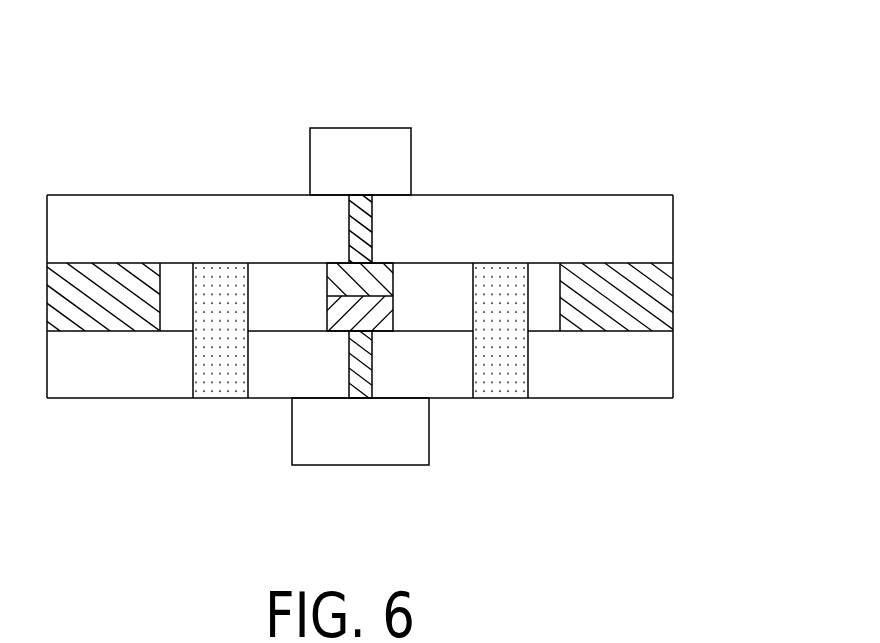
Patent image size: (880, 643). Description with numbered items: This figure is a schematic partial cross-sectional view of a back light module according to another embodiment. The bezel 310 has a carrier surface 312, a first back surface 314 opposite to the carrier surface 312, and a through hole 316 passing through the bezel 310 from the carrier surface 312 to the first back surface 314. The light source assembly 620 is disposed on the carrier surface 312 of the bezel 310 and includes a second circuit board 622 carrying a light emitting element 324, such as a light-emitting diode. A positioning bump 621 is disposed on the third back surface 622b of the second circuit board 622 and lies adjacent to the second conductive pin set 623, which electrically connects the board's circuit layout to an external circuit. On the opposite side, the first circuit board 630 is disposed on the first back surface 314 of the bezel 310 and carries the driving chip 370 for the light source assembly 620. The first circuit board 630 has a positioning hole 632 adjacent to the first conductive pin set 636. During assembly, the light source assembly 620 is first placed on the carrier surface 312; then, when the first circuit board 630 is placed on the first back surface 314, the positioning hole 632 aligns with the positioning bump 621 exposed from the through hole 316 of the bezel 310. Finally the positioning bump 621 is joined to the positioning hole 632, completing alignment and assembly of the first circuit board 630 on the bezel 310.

The light source assembly 620 is at (307, 73).
The light emitting element 324 is at (341, 137).
The second circuit board 622 is at (433, 220).
The third back surface 622b is at (620, 266).
The positioning bump 621 is at (217, 273).
The second conductive pin set 623 is at (340, 280).
The through hole 316 is at (545, 285).
The carrier surface 312 is at (625, 262).
The bezel 310 is at (660, 297).
The first back surface 314 is at (627, 332).
The positioning hole 632 is at (247, 374).
The first circuit board 630 is at (627, 390).
The driving chip 370 is at (360, 452).
The first conductive pin set 636 is at (377, 319).